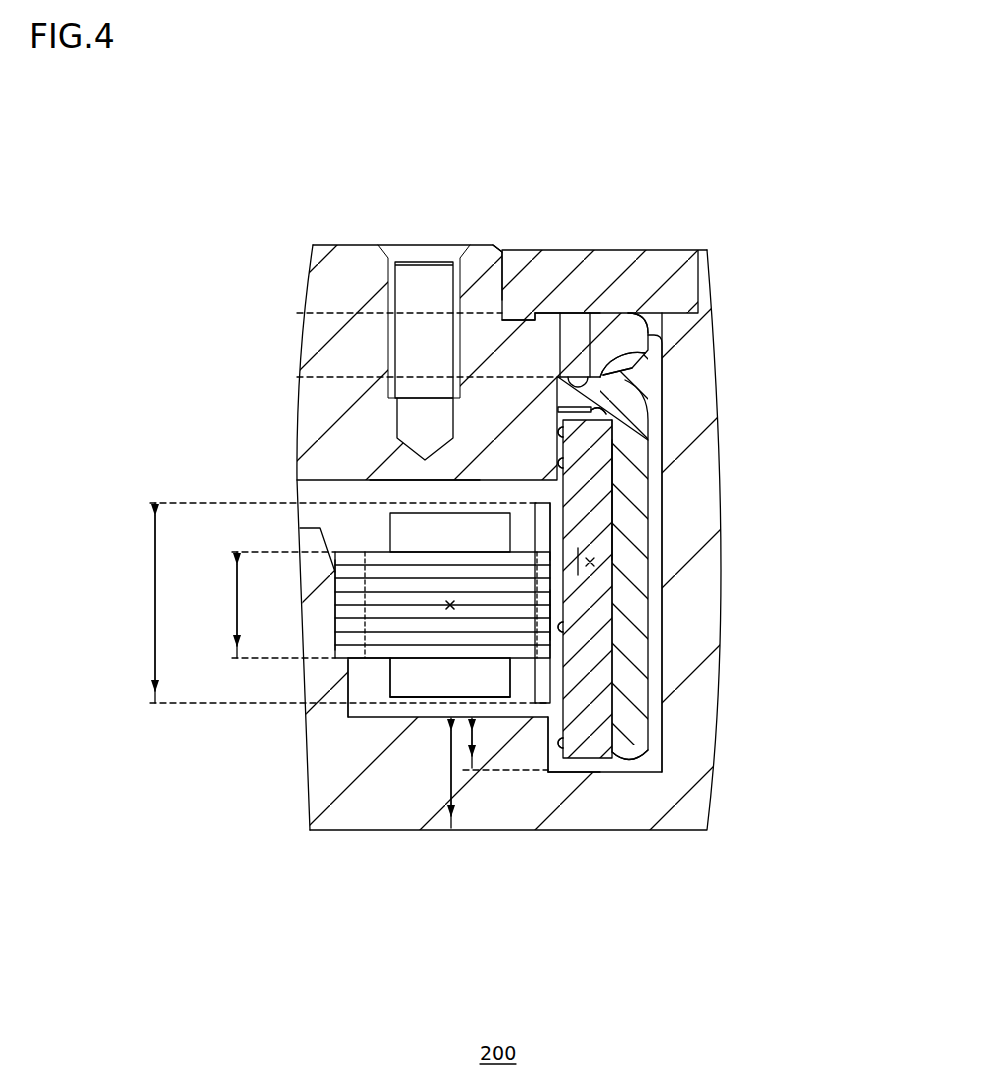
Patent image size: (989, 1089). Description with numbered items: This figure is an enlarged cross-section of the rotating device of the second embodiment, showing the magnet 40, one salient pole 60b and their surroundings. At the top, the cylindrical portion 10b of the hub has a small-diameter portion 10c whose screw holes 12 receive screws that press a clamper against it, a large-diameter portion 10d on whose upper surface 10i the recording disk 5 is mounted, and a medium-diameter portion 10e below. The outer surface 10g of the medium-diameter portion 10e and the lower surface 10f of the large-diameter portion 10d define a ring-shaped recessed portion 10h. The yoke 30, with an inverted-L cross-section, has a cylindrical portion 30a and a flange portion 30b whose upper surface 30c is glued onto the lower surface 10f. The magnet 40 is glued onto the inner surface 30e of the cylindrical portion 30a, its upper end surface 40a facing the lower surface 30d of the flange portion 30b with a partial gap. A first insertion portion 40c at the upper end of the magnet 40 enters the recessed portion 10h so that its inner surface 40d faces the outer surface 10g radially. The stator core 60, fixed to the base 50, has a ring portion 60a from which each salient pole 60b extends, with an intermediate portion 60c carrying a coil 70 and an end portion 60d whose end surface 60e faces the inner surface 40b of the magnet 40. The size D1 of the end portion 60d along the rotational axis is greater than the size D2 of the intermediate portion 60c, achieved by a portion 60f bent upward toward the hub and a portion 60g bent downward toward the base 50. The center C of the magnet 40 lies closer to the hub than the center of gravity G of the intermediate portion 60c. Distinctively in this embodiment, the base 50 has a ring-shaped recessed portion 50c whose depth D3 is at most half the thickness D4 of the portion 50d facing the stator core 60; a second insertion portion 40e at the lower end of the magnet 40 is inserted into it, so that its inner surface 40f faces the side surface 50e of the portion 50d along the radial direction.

The recording disk 5 is at (668, 250).
The cylindrical portion 10b is at (362, 245).
The small-diameter portion 10c is at (486, 290).
The large-diameter portion 10d is at (565, 333).
The medium-diameter portion 10e is at (517, 297).
The lower surface of the large-diameter portion 10f is at (590, 377).
The outer surface of the medium-diameter portion 10g is at (395, 433).
The ring-shaped recessed portion 10h is at (575, 410).
The upper surface of the large-diameter portion 10i is at (578, 300).
The screw hole 12 is at (450, 290).
The yoke 30 is at (640, 645).
The cylindrical portion of the yoke 30a is at (612, 500).
The flange portion 30b is at (626, 347).
The upper surface of the flange portion 30c is at (640, 330).
The lower surface of the flange portion 30d is at (603, 372).
The inner surface of the yoke cylindrical portion 30e is at (597, 560).
The magnet 40 is at (590, 668).
The upper end surface of the magnet 40a is at (592, 410).
The inner surface of the magnet 40b is at (603, 622).
The first insertion portion 40c is at (612, 432).
The inner surface of the first insertion portion 40d is at (625, 455).
The second insertion portion 40e is at (592, 718).
The inner surface of the second insertion portion 40f is at (603, 744).
The base 50 is at (682, 820).
The ring-shaped recessed portion of the base 50c is at (565, 768).
The portion of the base facing the stator core 50d is at (350, 700).
The side surface of the portion 50d 50e is at (552, 800).
The stator core 60 is at (355, 640).
The ring portion 60a is at (349, 720).
The salient pole 60b is at (553, 957).
The intermediate portion 60c is at (445, 697).
The end portion 60d is at (500, 697).
The end surface of the salient pole 60e is at (556, 608).
The portion protruding toward the hub side 60f is at (556, 528).
The portion protruding toward the base side 60g is at (538, 692).
The coil 70 is at (382, 662).
The center of the magnet C is at (580, 566).
The center of gravity of the intermediate portion G is at (442, 692).
The size of the end portion along the rotational axis D1 is at (152, 571).
The size of the intermediate portion along the rotational axis D2 is at (229, 603).
The depth of the ring-shaped recessed portion D3 is at (463, 755).
The thickness of the portion 50d D4 is at (452, 790).